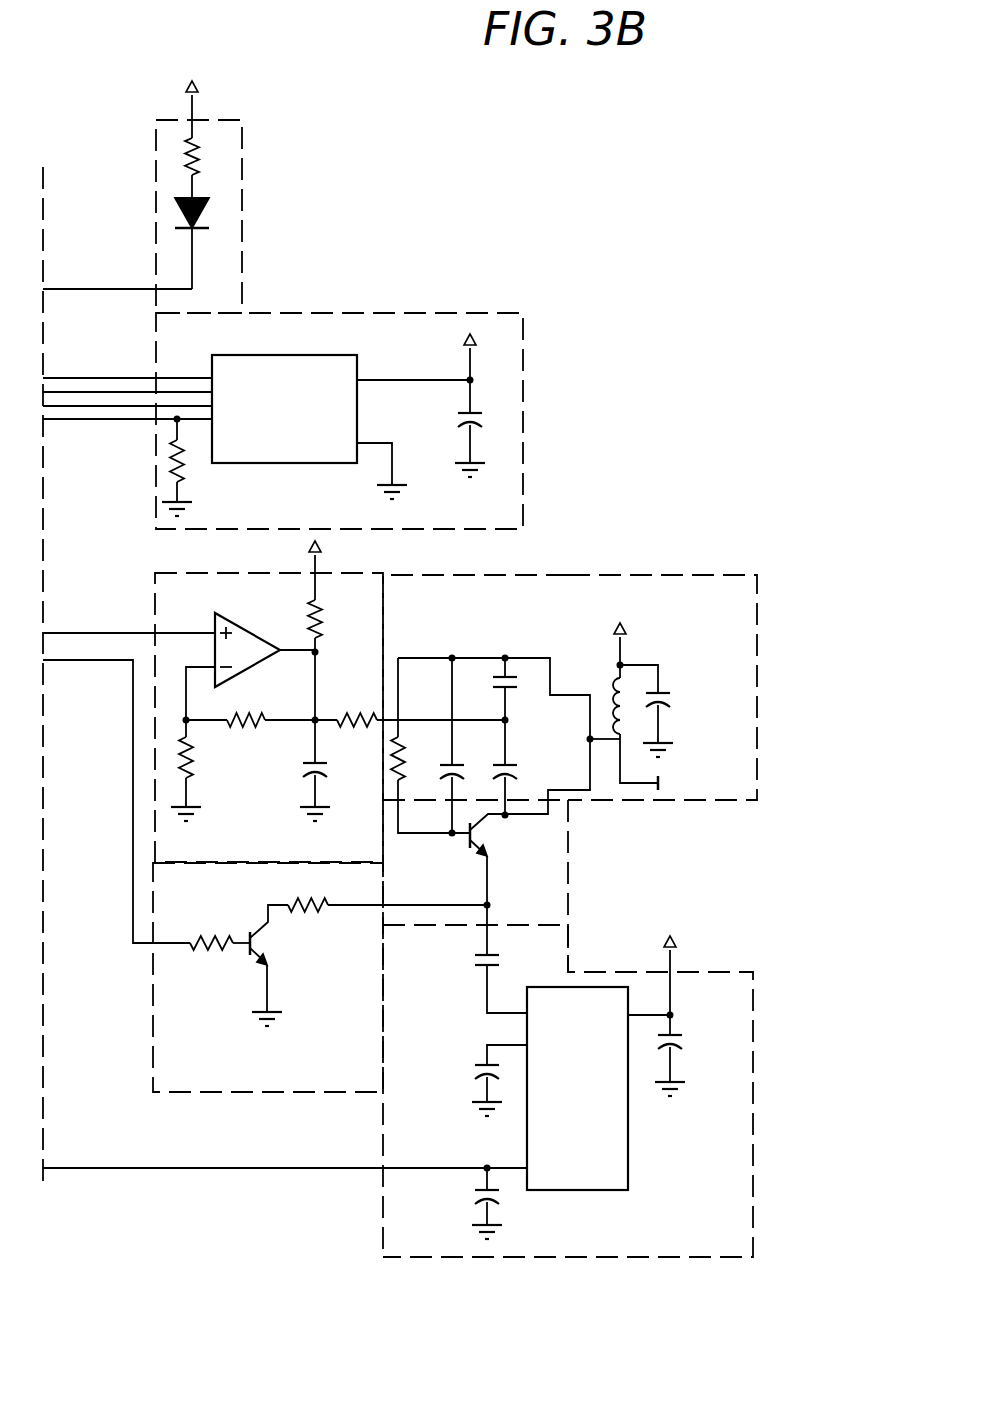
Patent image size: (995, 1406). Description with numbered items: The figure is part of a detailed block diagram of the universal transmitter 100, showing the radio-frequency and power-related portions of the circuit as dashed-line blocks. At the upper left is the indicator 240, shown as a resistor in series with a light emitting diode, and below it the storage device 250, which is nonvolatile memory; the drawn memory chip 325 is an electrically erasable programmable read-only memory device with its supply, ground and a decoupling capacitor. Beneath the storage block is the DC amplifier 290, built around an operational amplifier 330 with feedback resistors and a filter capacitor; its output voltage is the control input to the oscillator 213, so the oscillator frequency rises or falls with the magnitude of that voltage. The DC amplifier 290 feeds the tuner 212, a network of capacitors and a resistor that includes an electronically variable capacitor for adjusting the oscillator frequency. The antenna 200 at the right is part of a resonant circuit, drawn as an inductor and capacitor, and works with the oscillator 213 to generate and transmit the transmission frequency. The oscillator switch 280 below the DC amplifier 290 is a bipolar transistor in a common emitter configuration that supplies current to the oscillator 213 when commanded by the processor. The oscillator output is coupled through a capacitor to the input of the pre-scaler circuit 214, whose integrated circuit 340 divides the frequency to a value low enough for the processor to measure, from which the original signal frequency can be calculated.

The universal transmitter 100 is at (649, 163).
The indicator 240 is at (243, 232).
The storage device 250 is at (523, 477).
The EEPROM 325 is at (253, 355).
The DC amplifier 290 is at (153, 833).
The operational amplifier 330 is at (248, 637).
The oscillator switch 280 is at (152, 1032).
The tuner 212 is at (445, 577).
The antenna 200 is at (648, 577).
The oscillator 213 is at (553, 868).
The pre-scaler circuit 214 is at (753, 1200).
The prescaler integrated circuit 340 is at (598, 1101).